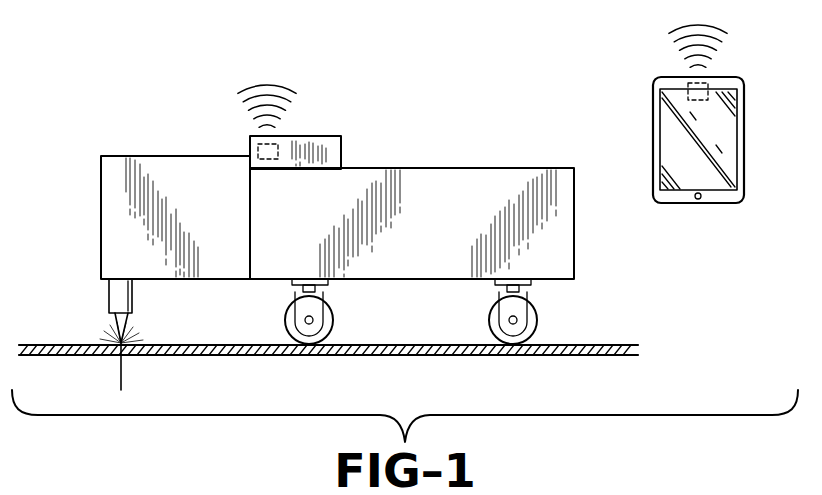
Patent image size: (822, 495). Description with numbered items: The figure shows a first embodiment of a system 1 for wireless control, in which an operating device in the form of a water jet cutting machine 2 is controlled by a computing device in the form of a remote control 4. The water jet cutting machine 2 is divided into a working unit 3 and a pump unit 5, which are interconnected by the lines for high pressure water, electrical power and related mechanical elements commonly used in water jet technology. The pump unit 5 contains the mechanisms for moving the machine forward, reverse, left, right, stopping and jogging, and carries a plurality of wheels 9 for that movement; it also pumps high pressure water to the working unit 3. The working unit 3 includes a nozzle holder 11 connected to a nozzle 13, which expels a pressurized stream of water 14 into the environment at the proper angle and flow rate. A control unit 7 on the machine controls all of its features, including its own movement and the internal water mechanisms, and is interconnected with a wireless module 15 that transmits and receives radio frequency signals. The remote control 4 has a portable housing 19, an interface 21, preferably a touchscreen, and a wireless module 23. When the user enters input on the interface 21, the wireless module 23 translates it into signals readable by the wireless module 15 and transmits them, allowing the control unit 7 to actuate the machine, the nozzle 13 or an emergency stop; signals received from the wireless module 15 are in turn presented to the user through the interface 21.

The system 1 is at (146, 89).
The water jet cutting machine 2 is at (387, 158).
The working unit 3 is at (97, 210).
The remote control 4 is at (642, 111).
The pump unit 5 is at (475, 164).
The control unit 7 is at (332, 130).
The wheels 9 is at (286, 313).
The nozzle holder 11 is at (108, 297).
The nozzle 13 is at (110, 328).
The pressurized stream of water 14 is at (119, 373).
The wireless module 15 is at (265, 170).
The housing 19 is at (666, 70).
The interface 21 is at (718, 138).
The wireless module 23 is at (697, 102).